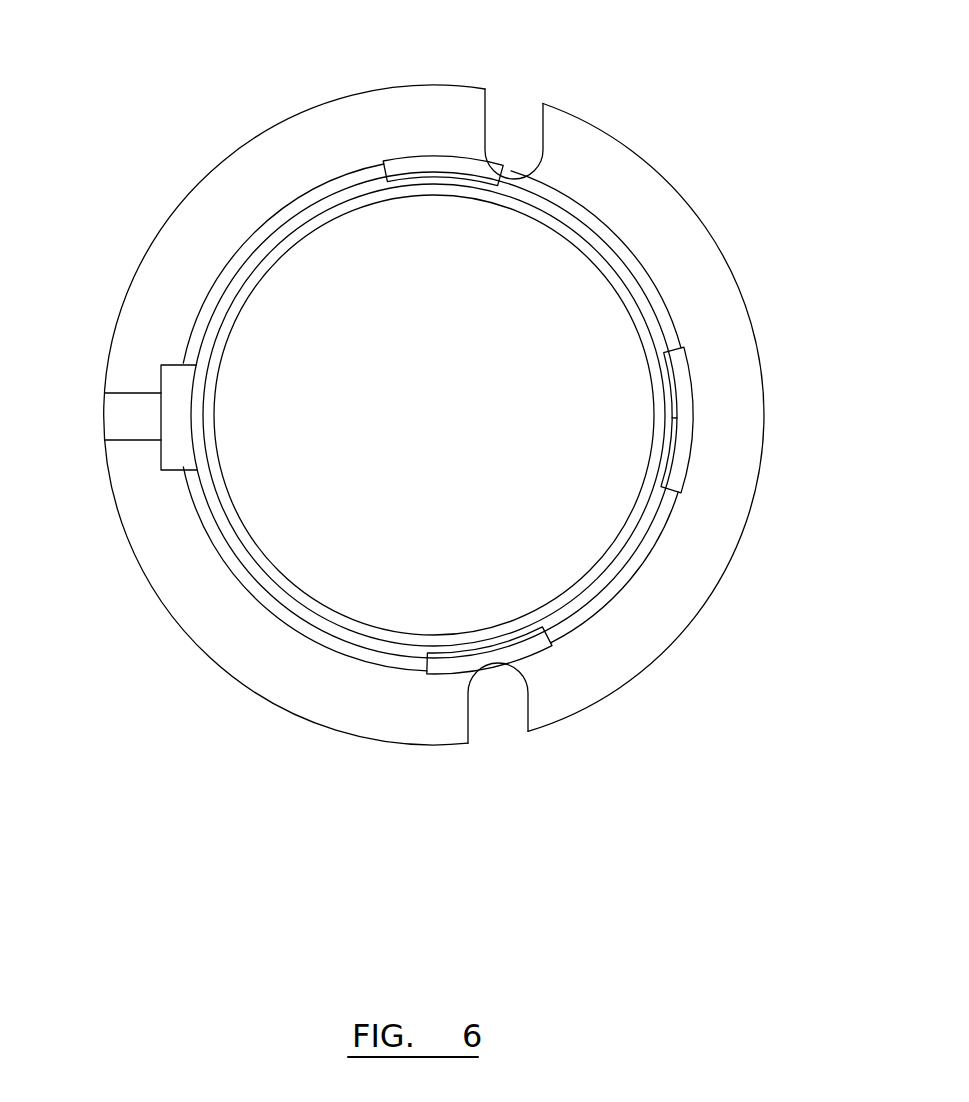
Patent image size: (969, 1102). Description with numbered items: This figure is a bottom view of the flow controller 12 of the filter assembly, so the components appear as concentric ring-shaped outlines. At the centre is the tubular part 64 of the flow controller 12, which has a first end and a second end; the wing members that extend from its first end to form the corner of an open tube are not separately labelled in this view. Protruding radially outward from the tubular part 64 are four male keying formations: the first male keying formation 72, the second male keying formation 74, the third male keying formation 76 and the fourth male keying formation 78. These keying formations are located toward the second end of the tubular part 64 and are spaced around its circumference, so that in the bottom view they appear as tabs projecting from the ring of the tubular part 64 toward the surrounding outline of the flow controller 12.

The flow controller 12 is at (434, 419).
The tubular part 64 is at (238, 685).
The first male keying formation 72 is at (174, 384).
The second male keying formation 74 is at (442, 162).
The third male keying formation 76 is at (688, 398).
The fourth male keying formation 78 is at (453, 663).